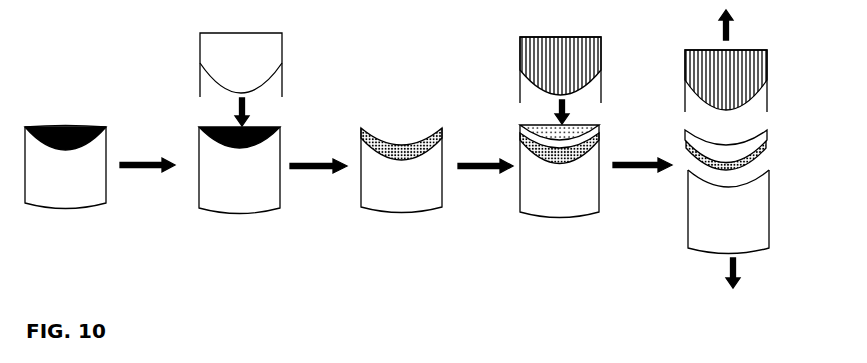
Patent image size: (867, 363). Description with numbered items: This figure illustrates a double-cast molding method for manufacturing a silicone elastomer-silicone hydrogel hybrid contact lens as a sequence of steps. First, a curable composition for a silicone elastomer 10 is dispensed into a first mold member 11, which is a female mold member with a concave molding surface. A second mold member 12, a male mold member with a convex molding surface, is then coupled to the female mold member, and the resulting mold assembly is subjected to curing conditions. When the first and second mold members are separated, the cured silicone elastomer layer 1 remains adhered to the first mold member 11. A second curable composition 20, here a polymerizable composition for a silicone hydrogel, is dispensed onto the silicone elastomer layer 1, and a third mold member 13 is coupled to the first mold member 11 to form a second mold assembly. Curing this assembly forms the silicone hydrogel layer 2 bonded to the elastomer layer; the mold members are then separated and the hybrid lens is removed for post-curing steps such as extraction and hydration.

The silicone elastomer layer 1 is at (390, 146).
The silicone hydrogel layer 2 is at (735, 145).
The curable composition for a silicone elastomer 10 is at (83, 127).
The first mold member 11 is at (80, 200).
The second mold member 12 is at (247, 67).
The third mold member 13 is at (573, 56).
The second curable composition 20 is at (578, 130).